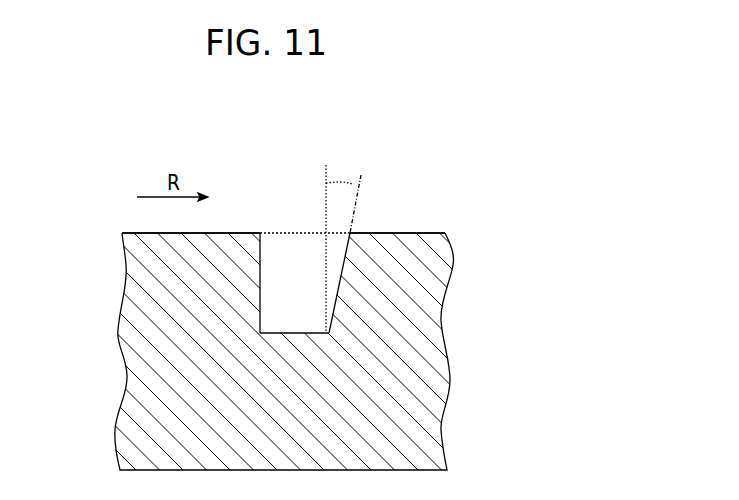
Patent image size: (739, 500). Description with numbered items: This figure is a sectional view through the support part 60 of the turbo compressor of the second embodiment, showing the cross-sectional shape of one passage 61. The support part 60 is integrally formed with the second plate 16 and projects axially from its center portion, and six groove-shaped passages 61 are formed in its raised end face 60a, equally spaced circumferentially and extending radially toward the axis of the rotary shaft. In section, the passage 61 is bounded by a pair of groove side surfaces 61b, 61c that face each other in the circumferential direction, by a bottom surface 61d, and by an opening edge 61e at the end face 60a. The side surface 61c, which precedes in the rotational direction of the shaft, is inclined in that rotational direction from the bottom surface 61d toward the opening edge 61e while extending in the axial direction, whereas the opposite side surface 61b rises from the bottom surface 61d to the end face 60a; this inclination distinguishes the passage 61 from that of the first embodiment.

The second plate 16 is at (456, 377).
The support part 60 is at (353, 348).
The end face of the support part 60a is at (408, 233).
The passage 61 is at (365, 247).
The groove side surface 61b is at (262, 257).
The groove side surface 61c is at (332, 252).
The bottom surface 61d is at (284, 333).
The opening edge 61e is at (350, 232).